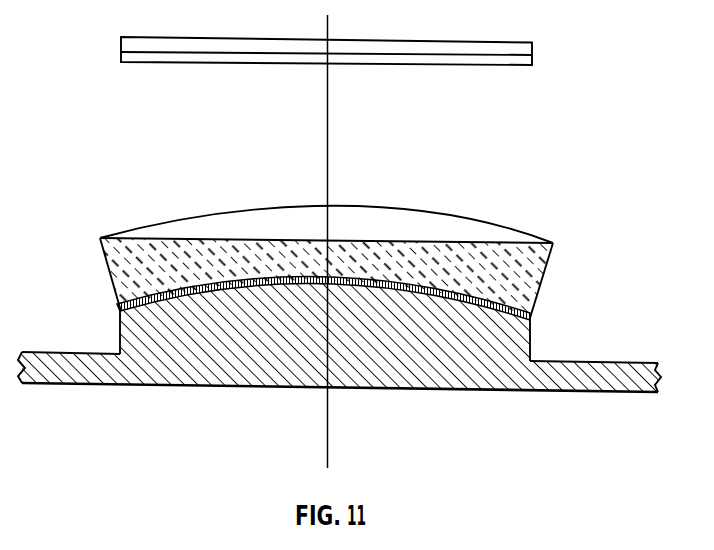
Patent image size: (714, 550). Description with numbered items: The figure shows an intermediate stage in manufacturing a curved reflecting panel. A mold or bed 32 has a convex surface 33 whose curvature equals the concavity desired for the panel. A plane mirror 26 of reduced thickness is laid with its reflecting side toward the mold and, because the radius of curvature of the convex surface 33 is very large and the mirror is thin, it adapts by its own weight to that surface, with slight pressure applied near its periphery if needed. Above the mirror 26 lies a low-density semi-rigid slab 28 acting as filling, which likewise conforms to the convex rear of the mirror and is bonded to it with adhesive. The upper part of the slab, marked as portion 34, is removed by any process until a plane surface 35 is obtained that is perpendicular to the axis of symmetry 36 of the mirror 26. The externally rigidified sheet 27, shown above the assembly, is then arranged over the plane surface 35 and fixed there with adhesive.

The plane mirror 26 is at (146, 306).
The sheet 27 is at (532, 57).
The semi-rigid slab 28 is at (173, 275).
The mold or bed 32 is at (184, 355).
The convex surface 33 is at (260, 288).
The upper part of the semi-rigid slab 34 is at (378, 222).
The plane surface 35 is at (223, 242).
The axis of symmetry 36 is at (330, 145).